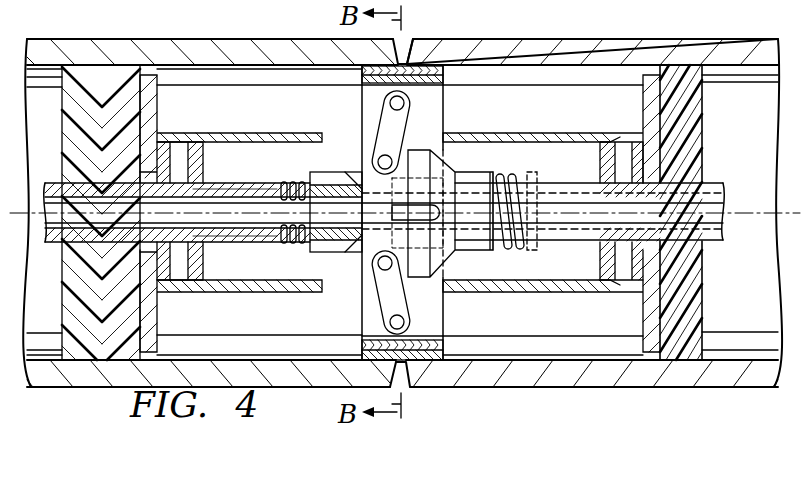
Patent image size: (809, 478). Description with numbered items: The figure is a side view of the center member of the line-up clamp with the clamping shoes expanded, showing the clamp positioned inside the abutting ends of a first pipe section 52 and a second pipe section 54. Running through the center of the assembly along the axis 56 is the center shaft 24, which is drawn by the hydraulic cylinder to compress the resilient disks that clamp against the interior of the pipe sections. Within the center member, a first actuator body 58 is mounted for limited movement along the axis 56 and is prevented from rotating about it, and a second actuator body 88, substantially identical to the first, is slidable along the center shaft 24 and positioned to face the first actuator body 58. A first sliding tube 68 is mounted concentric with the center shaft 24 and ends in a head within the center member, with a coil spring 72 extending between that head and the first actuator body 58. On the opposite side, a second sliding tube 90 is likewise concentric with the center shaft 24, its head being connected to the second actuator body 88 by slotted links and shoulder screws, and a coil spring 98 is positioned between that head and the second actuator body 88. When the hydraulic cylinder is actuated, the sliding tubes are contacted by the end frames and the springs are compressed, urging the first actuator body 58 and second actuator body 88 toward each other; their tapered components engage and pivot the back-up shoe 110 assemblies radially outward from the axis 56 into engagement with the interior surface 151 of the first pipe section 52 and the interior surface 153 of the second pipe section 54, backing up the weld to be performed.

The first pipe section 52 is at (236, 43).
The second pipe section 54 is at (545, 43).
The back-up shoe 110 is at (424, 45).
The interior surface of first pipe section 151 is at (294, 70).
The interior surface of second pipe section 153 is at (466, 64).
The second actuator body 88 is at (345, 176).
The coil spring 72 is at (506, 182).
The first sliding tube 68 is at (711, 189).
The axis 56 is at (735, 211).
The center shaft 24 is at (720, 221).
The first actuator body 58 is at (452, 254).
The second sliding tube 90 is at (237, 243).
The coil spring 98 is at (290, 247).